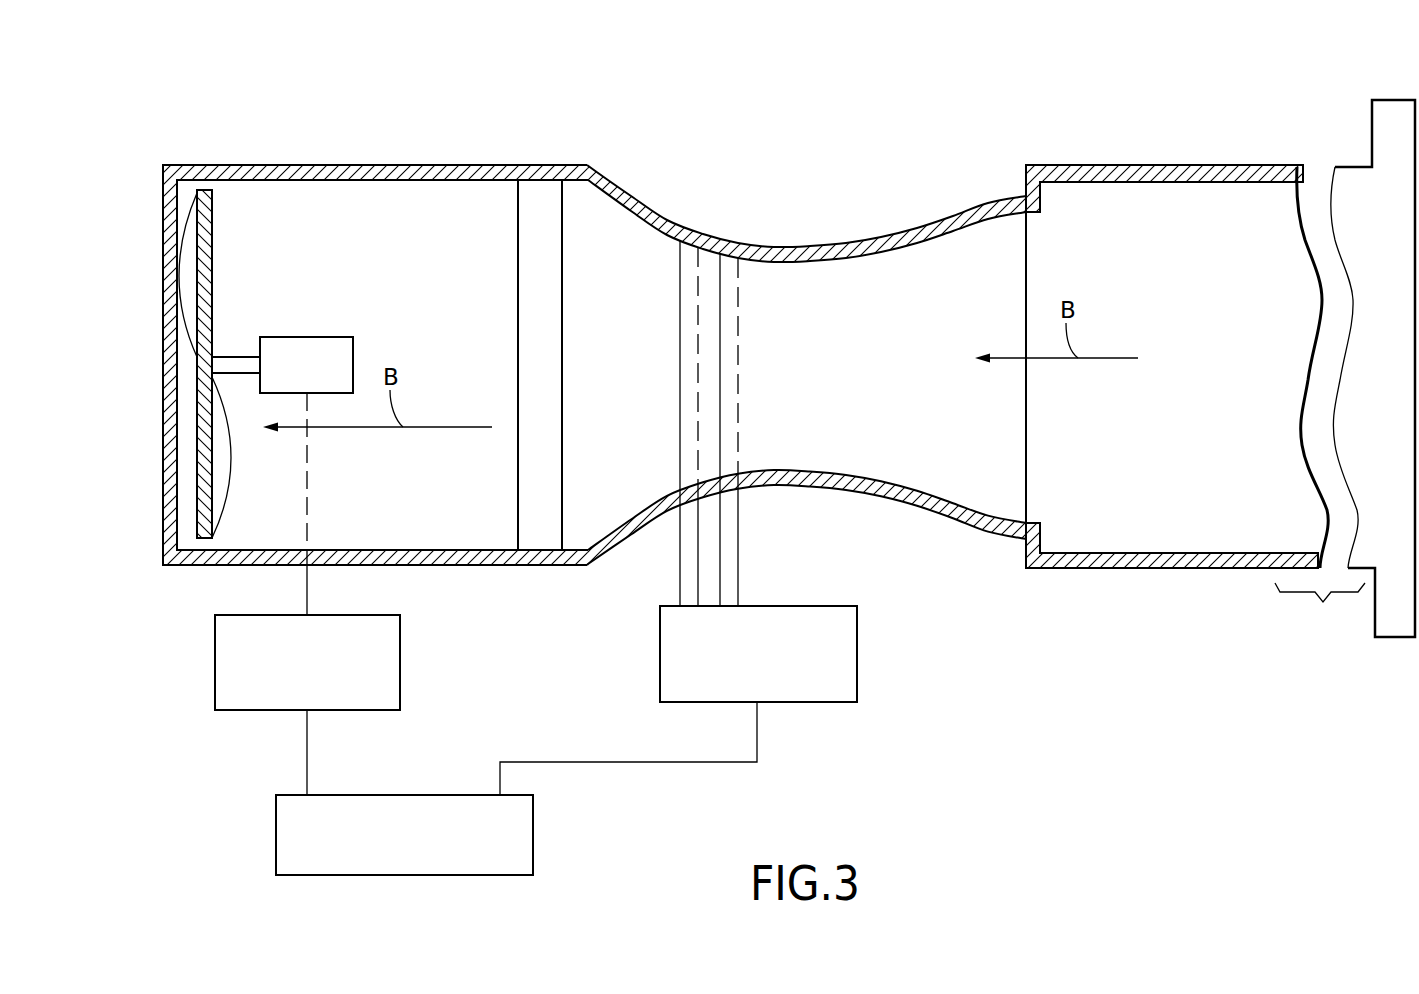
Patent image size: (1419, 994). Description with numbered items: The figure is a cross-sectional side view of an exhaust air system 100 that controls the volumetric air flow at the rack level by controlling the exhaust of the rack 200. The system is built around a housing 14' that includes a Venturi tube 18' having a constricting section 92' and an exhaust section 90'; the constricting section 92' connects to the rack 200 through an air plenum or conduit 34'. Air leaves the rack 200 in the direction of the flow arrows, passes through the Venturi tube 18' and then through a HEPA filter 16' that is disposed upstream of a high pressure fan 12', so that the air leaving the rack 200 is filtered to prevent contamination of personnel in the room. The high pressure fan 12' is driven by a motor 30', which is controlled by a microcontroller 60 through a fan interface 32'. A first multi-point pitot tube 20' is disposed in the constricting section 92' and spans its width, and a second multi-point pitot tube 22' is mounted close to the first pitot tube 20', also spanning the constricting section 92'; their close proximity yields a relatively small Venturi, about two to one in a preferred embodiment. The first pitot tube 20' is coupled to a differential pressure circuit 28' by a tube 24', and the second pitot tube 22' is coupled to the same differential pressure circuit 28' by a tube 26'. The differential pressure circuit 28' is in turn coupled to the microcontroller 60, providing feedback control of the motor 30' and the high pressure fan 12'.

The exhaust air system 100 is at (782, 137).
The high pressure fan 12' is at (175, 364).
The housing 14' is at (375, 329).
The HEPA filter 16' is at (599, 365).
The Venturi tube 18' is at (806, 365).
The first multi-point pitot tube 20' is at (757, 365).
The second multi-point pitot tube 22' is at (662, 366).
The tube 24' is at (758, 540).
The tube 26' is at (659, 545).
The differential pressure circuit 28' is at (711, 700).
The motor 30' is at (288, 341).
The fan interface 32' is at (342, 594).
The air plenum or conduit 34' is at (1195, 354).
The microcontroller 60 is at (410, 795).
The exhaust section 90' is at (414, 365).
The constricting section 92' is at (840, 353).
The rack 200 is at (1391, 88).